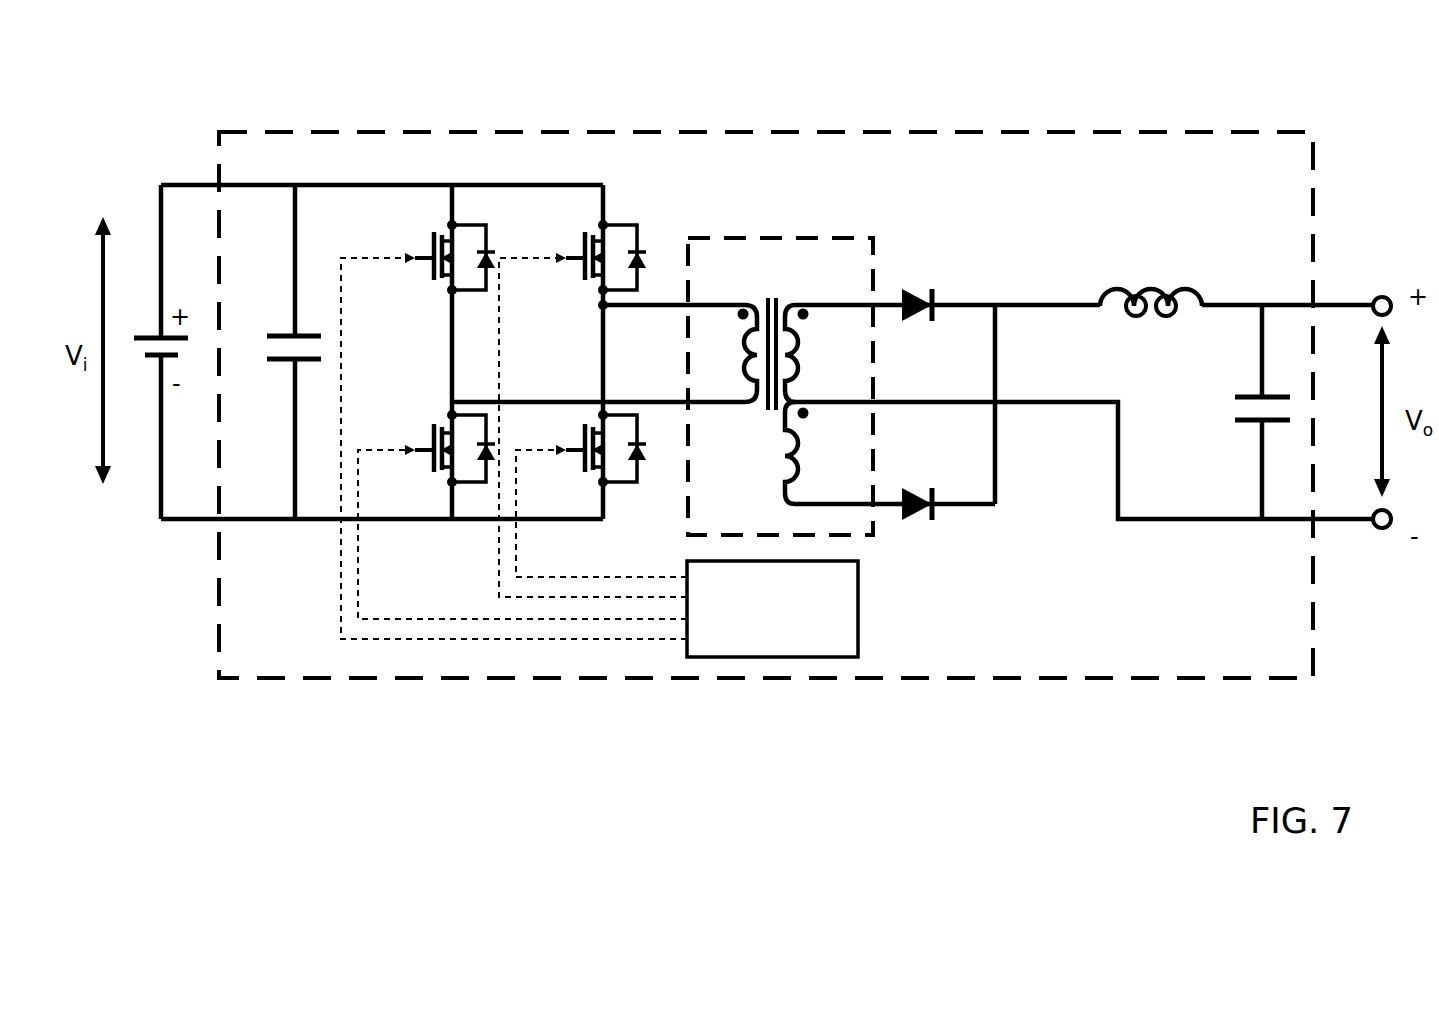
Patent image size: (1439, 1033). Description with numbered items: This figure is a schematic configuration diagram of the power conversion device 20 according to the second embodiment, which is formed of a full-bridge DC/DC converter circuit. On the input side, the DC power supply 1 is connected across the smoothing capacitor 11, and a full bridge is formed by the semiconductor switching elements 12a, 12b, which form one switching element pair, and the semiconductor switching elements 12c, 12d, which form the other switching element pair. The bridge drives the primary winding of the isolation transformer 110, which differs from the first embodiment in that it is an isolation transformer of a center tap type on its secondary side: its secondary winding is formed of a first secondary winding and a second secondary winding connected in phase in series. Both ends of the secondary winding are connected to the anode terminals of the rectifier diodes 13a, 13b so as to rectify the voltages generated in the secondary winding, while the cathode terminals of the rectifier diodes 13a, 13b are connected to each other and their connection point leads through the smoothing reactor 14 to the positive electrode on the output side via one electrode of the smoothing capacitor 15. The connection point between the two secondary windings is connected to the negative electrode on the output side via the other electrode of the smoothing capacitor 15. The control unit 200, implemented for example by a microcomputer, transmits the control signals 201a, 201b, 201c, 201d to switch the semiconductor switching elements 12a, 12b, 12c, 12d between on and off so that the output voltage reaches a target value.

The DC power supply 1 is at (155, 325).
The smoothing capacitor 11 is at (290, 332).
The semiconductor switching element 12a is at (442, 292).
The semiconductor switching element 12b is at (440, 476).
The semiconductor switching element 12c is at (594, 292).
The semiconductor switching element 12d is at (592, 476).
The rectifier diode 13a is at (926, 287).
The rectifier diode 13b is at (926, 485).
The smoothing reactor 14 is at (1154, 283).
The smoothing capacitor 15 is at (1251, 390).
The power conversion device 20 is at (268, 127).
The isolation transformer 110 is at (722, 232).
The control unit 200 is at (858, 606).
The control signal 201a is at (341, 609).
The control signal 201b is at (380, 621).
The control signal 201c is at (499, 543).
The control signal 201d is at (538, 576).